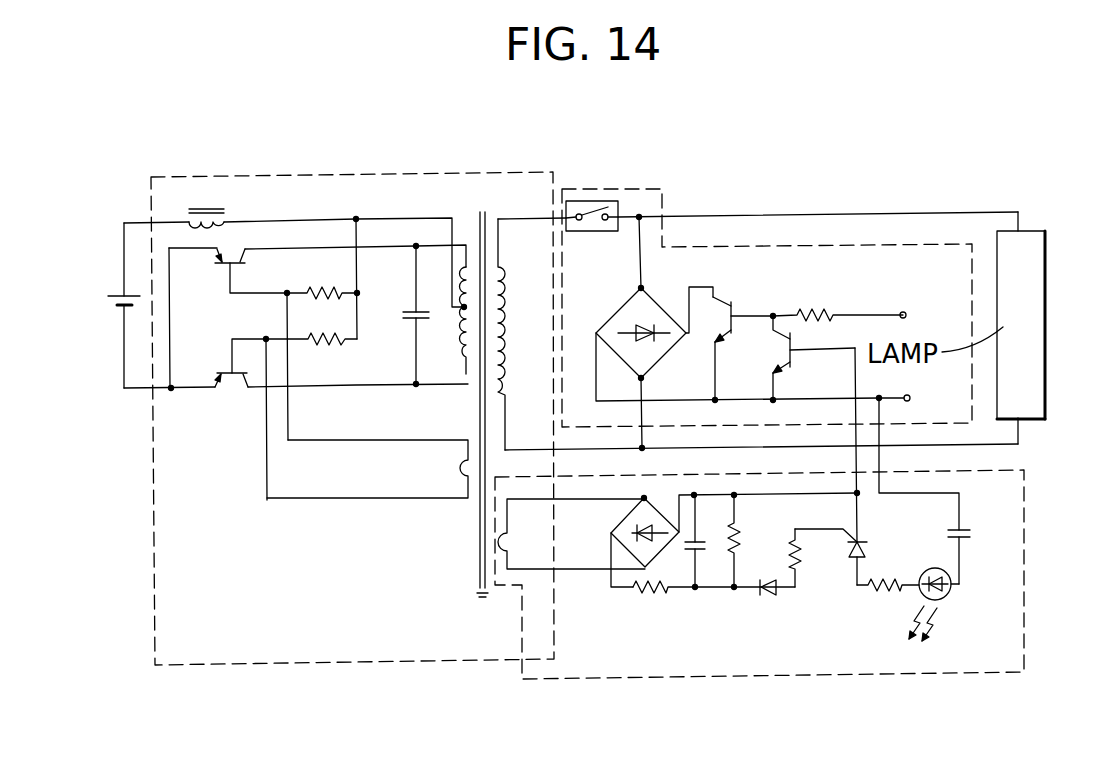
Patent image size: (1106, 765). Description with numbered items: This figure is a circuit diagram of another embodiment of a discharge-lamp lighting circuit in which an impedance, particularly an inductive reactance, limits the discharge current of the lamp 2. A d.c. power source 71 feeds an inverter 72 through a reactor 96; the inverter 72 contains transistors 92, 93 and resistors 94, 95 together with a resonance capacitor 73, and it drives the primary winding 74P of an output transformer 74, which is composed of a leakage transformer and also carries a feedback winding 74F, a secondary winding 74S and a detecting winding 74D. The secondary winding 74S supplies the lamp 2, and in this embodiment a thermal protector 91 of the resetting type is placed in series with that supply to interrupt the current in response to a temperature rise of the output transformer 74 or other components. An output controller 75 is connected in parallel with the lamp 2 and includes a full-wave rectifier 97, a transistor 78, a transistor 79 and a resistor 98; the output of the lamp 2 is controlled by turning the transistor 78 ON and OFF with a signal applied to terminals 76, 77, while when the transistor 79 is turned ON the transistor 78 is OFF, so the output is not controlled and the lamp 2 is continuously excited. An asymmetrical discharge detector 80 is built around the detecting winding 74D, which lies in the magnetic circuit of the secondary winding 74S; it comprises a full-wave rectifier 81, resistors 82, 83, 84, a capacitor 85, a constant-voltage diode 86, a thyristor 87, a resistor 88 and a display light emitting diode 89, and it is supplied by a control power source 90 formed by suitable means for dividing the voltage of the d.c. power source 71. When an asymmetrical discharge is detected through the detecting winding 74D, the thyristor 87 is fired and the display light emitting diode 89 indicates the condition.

The lamp 2 is at (1046, 312).
The d.c. power source 71 is at (110, 298).
The inverter 72 is at (153, 492).
The resonance capacitor 73 is at (409, 314).
The output transformer 74 is at (482, 210).
The primary winding 74P is at (467, 262).
The secondary winding 74S is at (492, 395).
The feedback winding 74F is at (468, 468).
The detecting winding 74D is at (508, 540).
The output controller 75 is at (855, 245).
The terminal 76 is at (924, 318).
The terminal 77 is at (913, 400).
The transistor 78 is at (733, 303).
The transistor 79 is at (793, 361).
The asymmetrical discharge detector 80 is at (1025, 535).
The full-wave rectifier 81 is at (620, 523).
The resistor 82 is at (647, 590).
The resistor 83 is at (740, 524).
The resistor 84 is at (797, 568).
The capacitor 85 is at (698, 551).
The constant-voltage diode 86 is at (770, 596).
The thyristor 87 is at (866, 548).
The resistor 88 is at (878, 588).
The display light emitting diode 89 is at (950, 594).
The control power source 90 is at (972, 533).
The thermal protector 91 is at (583, 200).
The transistor 92 is at (219, 266).
The transistor 93 is at (230, 378).
The resistor 94 is at (307, 290).
The resistor 95 is at (340, 342).
The reactor 96 is at (215, 211).
The full-wave rectifier 97 is at (615, 313).
The resistor 98 is at (820, 313).